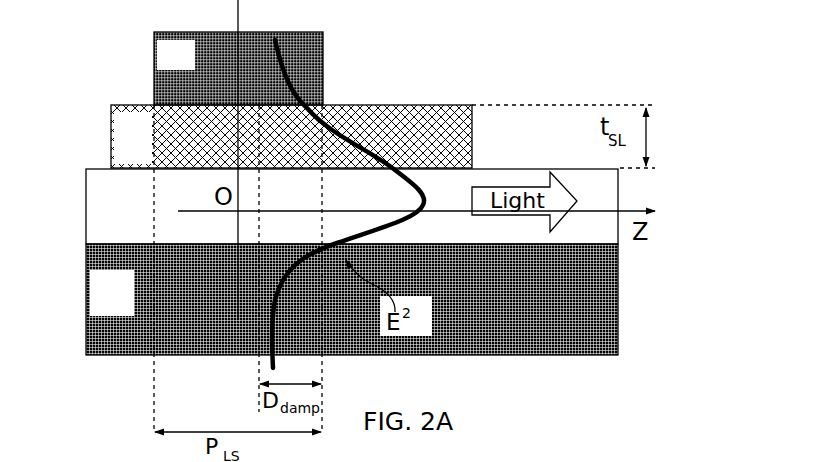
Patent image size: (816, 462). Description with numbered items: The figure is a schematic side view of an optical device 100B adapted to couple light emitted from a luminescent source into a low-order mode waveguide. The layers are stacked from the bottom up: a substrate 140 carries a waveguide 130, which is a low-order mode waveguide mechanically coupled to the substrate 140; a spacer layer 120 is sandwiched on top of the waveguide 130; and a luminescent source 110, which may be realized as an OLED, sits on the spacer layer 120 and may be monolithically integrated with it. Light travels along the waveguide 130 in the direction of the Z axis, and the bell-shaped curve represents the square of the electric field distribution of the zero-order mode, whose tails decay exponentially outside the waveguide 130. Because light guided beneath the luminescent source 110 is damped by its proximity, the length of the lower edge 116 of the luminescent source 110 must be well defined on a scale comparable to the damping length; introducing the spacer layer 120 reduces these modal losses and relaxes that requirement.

The optical device 100B is at (655, 0).
The luminescent source 110 is at (154, 63).
The lower edge 116 is at (243, 103).
The spacer layer 120 is at (110, 128).
The waveguide 130 is at (86, 195).
The substrate 140 is at (86, 277).